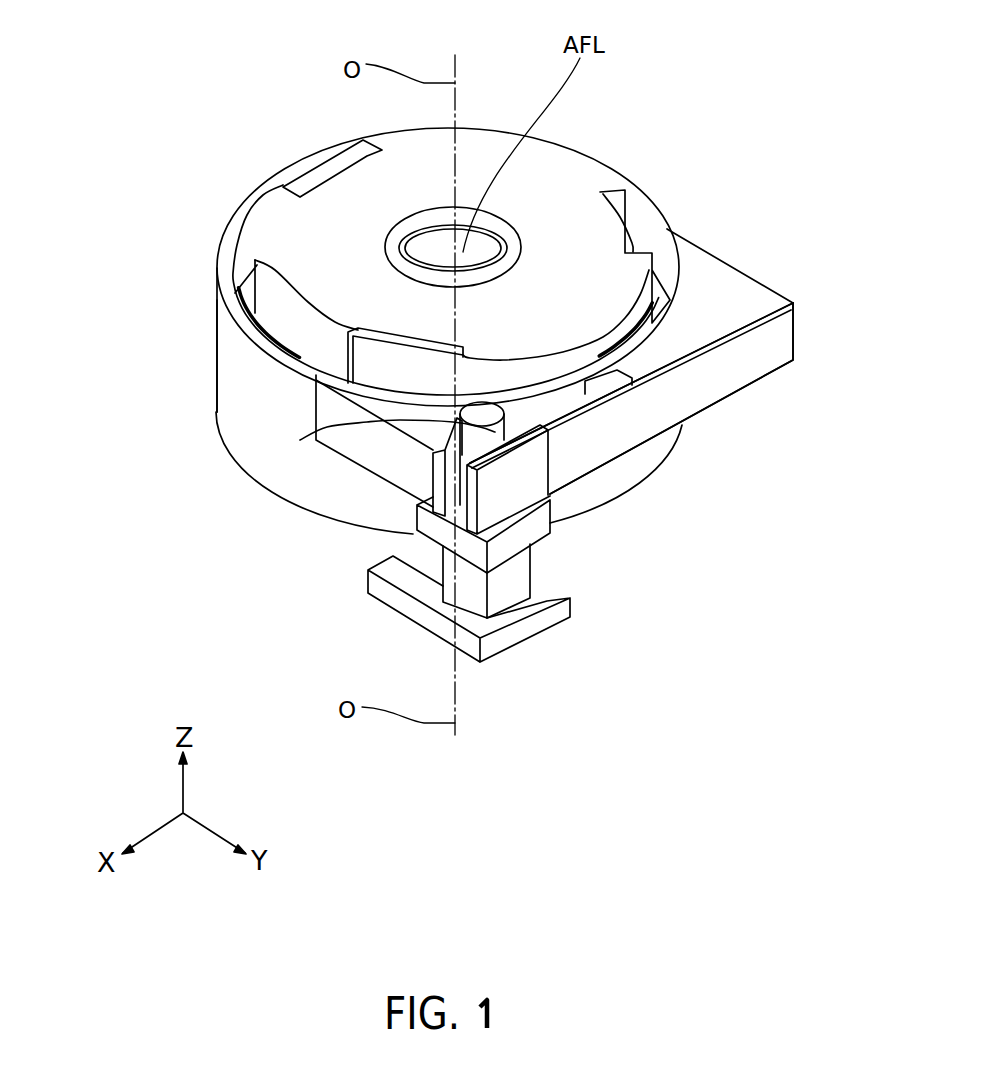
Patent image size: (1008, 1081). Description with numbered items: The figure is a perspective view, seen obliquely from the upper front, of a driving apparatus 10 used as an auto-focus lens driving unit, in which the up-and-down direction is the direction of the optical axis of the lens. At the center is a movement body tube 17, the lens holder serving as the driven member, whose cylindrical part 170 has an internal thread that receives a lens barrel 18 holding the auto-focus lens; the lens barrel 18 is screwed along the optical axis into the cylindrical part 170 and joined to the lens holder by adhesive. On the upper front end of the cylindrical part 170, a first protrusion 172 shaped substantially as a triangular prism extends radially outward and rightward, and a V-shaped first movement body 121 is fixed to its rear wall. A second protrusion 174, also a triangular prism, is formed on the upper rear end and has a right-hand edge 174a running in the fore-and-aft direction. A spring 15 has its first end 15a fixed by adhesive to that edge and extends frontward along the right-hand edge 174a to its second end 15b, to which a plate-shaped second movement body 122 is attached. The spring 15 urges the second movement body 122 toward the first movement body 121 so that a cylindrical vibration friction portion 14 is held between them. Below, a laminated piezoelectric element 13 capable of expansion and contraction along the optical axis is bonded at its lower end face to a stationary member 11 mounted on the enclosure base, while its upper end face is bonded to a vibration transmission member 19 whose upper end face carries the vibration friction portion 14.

The driving apparatus 10 is at (699, 102).
The stationary member 11 is at (503, 633).
The laminated piezoelectric element 13 is at (533, 592).
The vibration friction portion 14 is at (347, 432).
The spring 15 is at (617, 423).
The first end of spring 15a is at (762, 353).
The second end of spring 15b is at (520, 480).
The movement body tube 17 is at (220, 353).
The cylindrical part 170 is at (235, 407).
The first protrusion 172 is at (350, 452).
The second protrusion 174 is at (707, 273).
The right-hand edge 174a is at (737, 323).
The lens barrel 18 is at (277, 222).
The vibration transmission member 19 is at (547, 487).
The first movement body 121 is at (442, 480).
The second movement body 122 is at (555, 428).